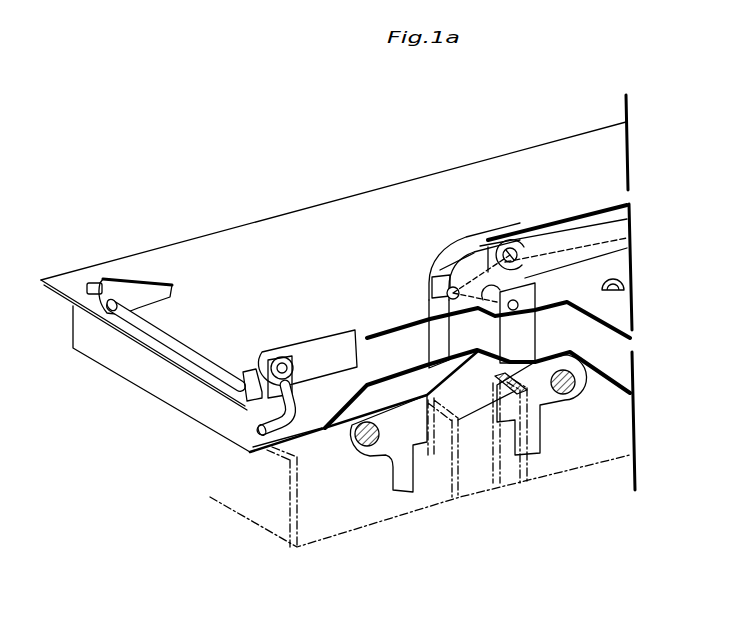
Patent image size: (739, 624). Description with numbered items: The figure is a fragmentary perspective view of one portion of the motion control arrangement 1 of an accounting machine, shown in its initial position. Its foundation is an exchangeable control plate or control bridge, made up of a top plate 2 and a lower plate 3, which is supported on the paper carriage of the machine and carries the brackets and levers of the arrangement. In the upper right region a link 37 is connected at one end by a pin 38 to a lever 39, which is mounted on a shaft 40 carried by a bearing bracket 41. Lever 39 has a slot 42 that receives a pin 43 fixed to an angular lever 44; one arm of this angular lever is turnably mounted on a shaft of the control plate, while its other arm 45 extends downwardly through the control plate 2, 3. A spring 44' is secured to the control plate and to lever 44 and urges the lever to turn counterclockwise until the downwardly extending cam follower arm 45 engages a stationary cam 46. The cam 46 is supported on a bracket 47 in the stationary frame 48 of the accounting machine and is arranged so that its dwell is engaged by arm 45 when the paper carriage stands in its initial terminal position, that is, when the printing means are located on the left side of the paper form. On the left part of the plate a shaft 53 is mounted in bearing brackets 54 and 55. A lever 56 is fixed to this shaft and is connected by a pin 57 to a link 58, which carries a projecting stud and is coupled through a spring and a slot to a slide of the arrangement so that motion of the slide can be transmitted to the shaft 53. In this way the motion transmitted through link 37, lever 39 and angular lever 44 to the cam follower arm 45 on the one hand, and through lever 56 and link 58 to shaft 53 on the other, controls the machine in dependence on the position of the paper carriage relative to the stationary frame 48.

The motion control arrangement 1 is at (338, 140).
The top plate 2 is at (305, 209).
The lower plate 3 is at (172, 397).
The link 37 is at (543, 240).
The pin 38 is at (512, 245).
The lever 39 is at (474, 258).
The shaft 40 is at (492, 286).
The bearing bracket 41 is at (530, 298).
The slot 42 is at (446, 293).
The pin 43 is at (436, 278).
The angular lever 44 is at (474, 261).
The spring 44' is at (606, 272).
The arm 45 is at (433, 336).
The stationary cam 46 is at (455, 373).
The bracket 47 is at (410, 477).
The stationary frame 48 is at (458, 497).
The shaft 53 is at (205, 357).
The bearing bracket 54 is at (243, 378).
The bearing bracket 55 is at (130, 290).
The lever 56 is at (263, 372).
The pin 57 is at (283, 357).
The link 58 is at (332, 350).